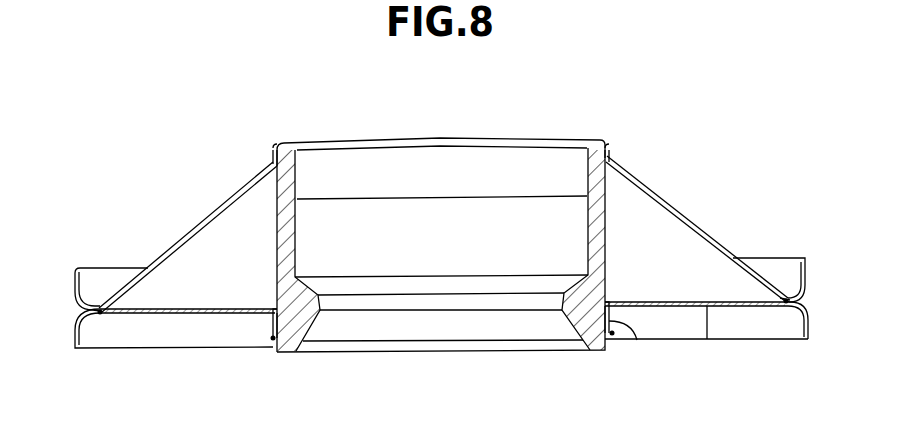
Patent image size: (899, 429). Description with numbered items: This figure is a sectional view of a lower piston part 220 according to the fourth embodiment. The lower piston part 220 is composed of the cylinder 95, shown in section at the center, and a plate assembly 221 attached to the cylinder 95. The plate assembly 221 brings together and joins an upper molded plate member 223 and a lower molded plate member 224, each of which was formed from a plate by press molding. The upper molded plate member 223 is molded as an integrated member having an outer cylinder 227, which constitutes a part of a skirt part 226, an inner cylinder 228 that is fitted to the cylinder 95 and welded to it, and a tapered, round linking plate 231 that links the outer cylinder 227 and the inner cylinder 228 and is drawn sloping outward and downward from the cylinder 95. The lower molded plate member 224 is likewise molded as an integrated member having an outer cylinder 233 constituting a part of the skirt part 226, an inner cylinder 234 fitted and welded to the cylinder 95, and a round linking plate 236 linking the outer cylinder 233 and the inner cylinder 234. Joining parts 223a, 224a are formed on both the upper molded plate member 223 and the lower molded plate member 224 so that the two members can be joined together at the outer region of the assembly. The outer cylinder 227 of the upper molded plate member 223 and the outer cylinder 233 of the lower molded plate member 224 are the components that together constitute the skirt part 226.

The cylinder 95 is at (440, 140).
The lower piston part 220 is at (327, 142).
The plate assembly 221 is at (182, 238).
The upper molded plate member 223 is at (212, 215).
The joining part 223a is at (787, 301).
The lower molded plate member 224 is at (190, 317).
The joining part 224a is at (788, 307).
The skirt part 226 is at (72, 283).
The outer cylinder 227 is at (808, 268).
The inner cylinder 228 is at (605, 160).
The linking plate 231 is at (683, 217).
The outer cylinder 233 is at (808, 323).
The inner cylinder 234 is at (637, 342).
The linking plate 236 is at (707, 339).